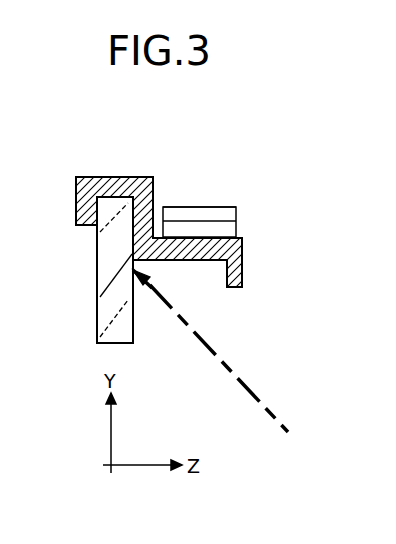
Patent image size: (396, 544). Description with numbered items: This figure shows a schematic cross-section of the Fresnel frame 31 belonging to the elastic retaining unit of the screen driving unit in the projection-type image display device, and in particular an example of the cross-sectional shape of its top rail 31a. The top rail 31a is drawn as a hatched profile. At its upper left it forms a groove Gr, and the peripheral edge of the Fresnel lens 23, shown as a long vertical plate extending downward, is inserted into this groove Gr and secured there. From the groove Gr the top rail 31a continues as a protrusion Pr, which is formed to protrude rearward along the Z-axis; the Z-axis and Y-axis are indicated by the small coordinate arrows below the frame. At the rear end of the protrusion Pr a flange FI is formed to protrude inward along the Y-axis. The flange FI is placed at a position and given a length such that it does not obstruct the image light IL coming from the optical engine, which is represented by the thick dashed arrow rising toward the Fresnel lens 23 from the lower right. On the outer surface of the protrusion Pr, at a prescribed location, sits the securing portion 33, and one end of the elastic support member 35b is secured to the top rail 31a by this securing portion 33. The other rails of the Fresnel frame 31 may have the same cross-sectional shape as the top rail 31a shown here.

The Fresnel frame 31 is at (80, 175).
The top rail 31a is at (120, 177).
The groove Gr is at (78, 210).
The Fresnel lens 23 is at (97, 268).
The securing portion 33 is at (236, 228).
The elastic support member 35b is at (203, 206).
The flange FI is at (242, 268).
The protrusion Pr is at (200, 256).
The image light IL is at (250, 385).